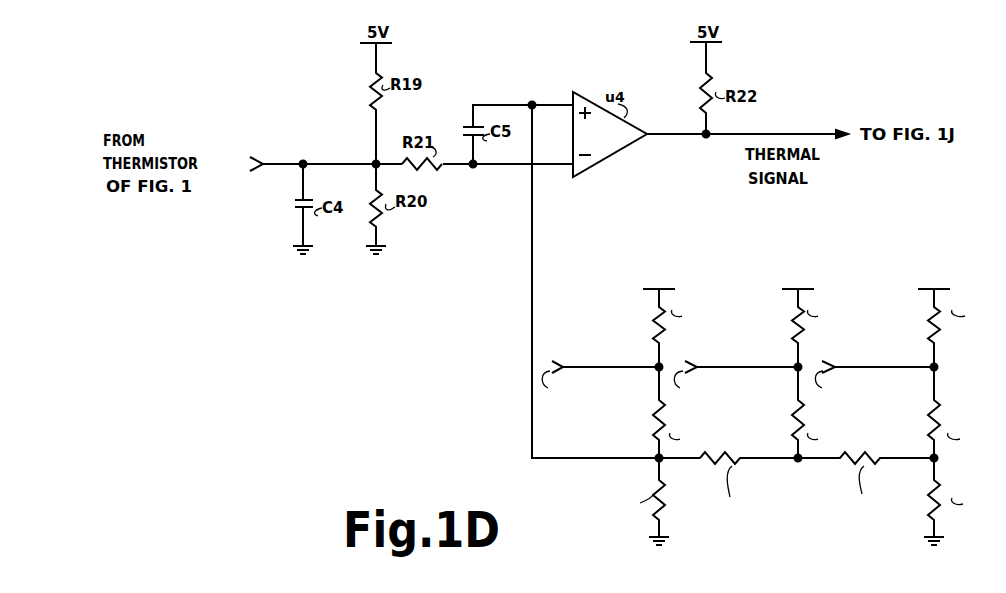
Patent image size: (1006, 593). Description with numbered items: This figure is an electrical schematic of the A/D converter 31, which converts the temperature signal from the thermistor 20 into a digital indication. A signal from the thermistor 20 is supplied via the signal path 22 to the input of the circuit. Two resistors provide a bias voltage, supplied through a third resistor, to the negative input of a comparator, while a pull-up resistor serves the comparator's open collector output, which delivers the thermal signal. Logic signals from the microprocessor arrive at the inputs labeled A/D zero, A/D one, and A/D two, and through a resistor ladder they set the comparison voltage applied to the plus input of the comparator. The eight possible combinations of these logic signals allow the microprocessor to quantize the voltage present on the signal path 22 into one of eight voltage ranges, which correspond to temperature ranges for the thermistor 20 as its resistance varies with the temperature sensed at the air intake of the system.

The thermistor 20 is at (259, 164).
The signal path 22 is at (298, 161).
The A/D converter 31 is at (588, 505).